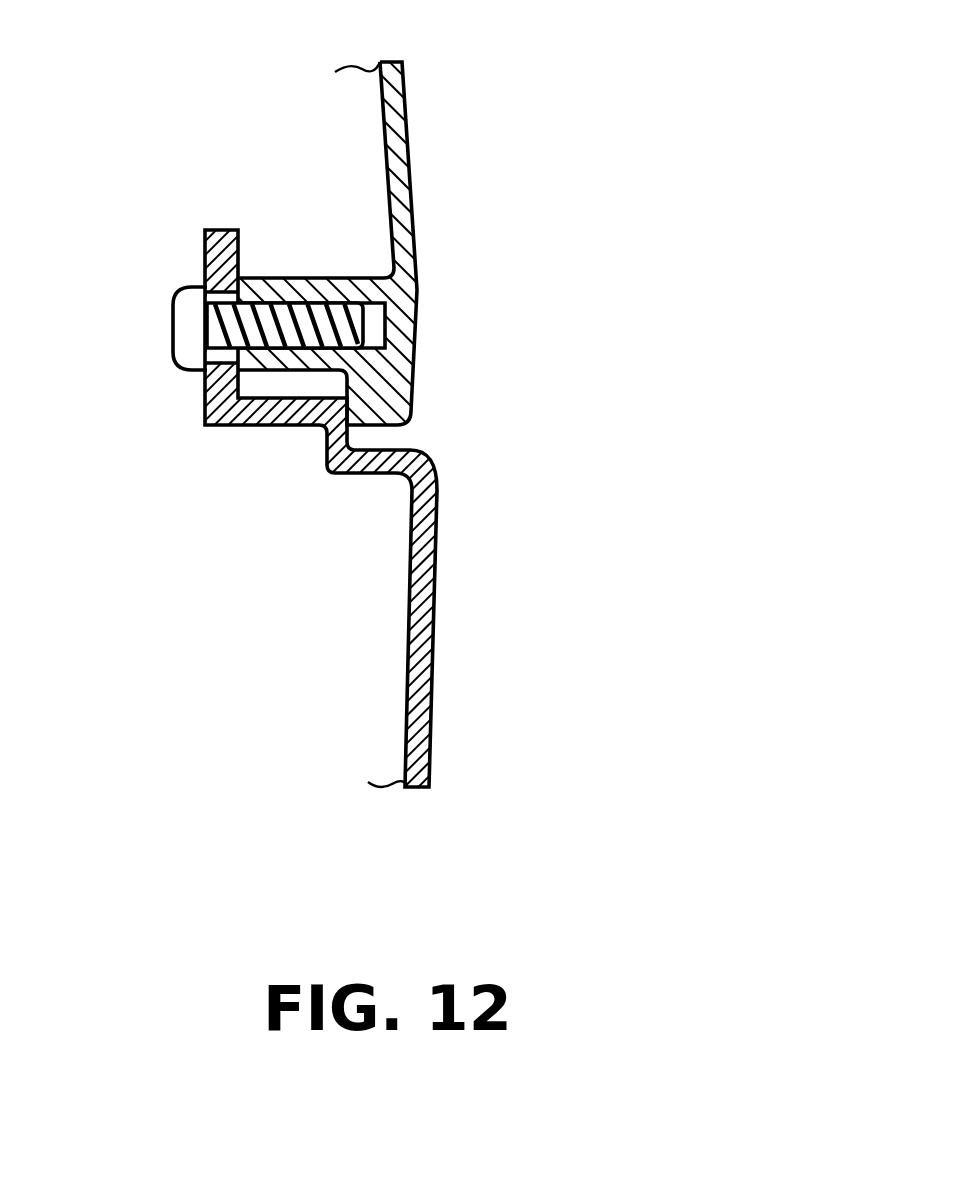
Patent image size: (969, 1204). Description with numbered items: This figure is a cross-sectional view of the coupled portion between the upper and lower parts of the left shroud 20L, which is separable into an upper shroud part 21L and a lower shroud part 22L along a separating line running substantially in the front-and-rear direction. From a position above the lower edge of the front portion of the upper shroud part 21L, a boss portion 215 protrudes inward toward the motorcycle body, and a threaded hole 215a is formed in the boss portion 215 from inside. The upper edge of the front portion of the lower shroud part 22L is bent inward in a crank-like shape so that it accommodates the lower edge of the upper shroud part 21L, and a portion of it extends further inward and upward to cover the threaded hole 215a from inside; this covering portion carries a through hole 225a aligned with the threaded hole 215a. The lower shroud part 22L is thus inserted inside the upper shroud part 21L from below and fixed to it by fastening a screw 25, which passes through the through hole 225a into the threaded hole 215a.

The shroud 20L is at (679, 191).
The upper shroud part 21L is at (413, 157).
The boss portion 215 is at (310, 275).
The threaded hole 215a is at (386, 327).
The lower shroud part 22L is at (435, 637).
The through hole 225a is at (203, 353).
The screw 25 is at (178, 329).